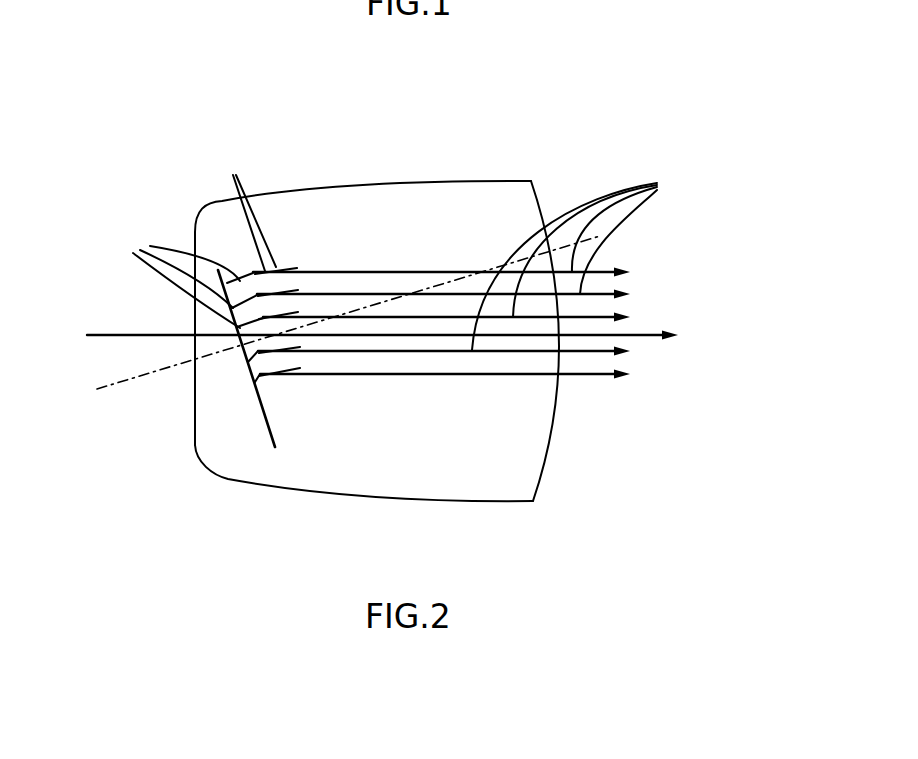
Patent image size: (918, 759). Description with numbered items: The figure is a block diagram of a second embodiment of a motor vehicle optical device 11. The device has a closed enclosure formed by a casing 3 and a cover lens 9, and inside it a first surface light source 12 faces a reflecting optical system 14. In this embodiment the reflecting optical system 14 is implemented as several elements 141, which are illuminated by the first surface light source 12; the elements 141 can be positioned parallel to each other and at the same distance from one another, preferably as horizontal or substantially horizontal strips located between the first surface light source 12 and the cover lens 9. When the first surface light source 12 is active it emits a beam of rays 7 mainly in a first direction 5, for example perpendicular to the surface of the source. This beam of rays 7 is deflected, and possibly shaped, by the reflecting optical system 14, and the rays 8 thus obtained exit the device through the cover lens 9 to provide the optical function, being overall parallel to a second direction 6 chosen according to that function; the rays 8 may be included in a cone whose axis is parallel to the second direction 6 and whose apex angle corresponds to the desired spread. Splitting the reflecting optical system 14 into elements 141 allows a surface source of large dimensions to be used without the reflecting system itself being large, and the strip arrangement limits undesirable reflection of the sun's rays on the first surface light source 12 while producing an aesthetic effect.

The casing 3 is at (387, 500).
The first direction 5 is at (127, 378).
The second direction 6 is at (652, 337).
The beam of rays 7 is at (185, 276).
The rays 8 is at (570, 257).
The cover lens 9 is at (552, 441).
The optical device 11 is at (603, 132).
The first surface light source 12 is at (268, 427).
The reflecting optical system 14 is at (300, 250).
The elements 141 is at (246, 207).